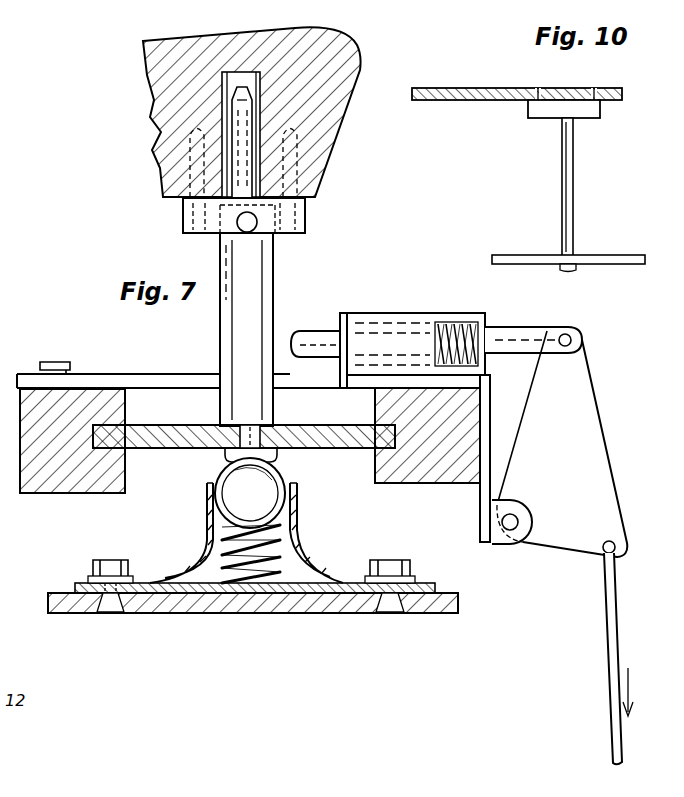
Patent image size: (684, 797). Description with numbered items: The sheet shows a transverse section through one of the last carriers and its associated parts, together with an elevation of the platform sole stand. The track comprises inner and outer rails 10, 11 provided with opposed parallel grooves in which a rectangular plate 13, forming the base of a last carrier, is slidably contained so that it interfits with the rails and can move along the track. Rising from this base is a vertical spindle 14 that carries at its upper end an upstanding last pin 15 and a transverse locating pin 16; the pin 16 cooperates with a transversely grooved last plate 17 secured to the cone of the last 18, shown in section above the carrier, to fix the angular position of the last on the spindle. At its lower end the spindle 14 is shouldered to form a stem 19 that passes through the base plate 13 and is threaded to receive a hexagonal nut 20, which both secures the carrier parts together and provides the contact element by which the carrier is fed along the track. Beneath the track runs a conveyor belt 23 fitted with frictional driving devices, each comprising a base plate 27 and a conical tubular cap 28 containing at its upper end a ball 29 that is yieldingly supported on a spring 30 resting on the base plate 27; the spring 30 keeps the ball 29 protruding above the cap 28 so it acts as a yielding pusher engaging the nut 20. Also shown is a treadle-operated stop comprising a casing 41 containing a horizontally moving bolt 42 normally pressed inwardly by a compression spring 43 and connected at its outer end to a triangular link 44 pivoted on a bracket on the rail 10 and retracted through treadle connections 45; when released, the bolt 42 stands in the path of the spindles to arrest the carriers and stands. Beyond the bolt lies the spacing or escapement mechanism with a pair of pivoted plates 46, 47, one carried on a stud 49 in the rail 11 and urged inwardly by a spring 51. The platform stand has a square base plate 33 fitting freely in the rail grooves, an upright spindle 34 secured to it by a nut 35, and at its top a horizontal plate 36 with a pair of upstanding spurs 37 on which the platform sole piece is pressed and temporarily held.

In FIG. 7, the inner rail 10 is at (442, 487).
In FIG. 7, the outer rail 11 is at (92, 493).
In FIG. 7, the rectangular plate 13 is at (185, 452).
In FIG. 7, the vertical spindle 14 is at (263, 294).
In FIG. 7, the last pin 15 is at (243, 133).
In FIG. 7, the transverse locating pin 16 is at (249, 233).
In FIG. 7, the last plate 17 is at (305, 222).
In FIG. 7, the die block 18 is at (343, 65).
In FIG. 7, the stem 19 is at (258, 428).
In FIG. 7, the hexagonal nut 20 is at (278, 462).
In FIG. 7, the conveyor belt 23 is at (458, 602).
In FIG. 7, the base plate 27 is at (303, 594).
In FIG. 7, the conical tubular cap 28 is at (297, 540).
In FIG. 7, the ball 29 is at (284, 502).
In FIG. 7, the spring 30 is at (283, 557).
In FIG. 10, the base plate 33 is at (600, 255).
In FIG. 10, the upright spindle 34 is at (573, 158).
In FIG. 10, the nut 35 is at (578, 270).
In FIG. 10, the horizontal plate 36 is at (594, 112).
In FIG. 10, the upstanding spurs 37 is at (594, 87).
In FIG. 7, the casing 41 is at (388, 318).
In FIG. 7, the bolt 42 is at (312, 342).
In FIG. 7, the compression spring 43 is at (470, 322).
In FIG. 7, the triangular link 44 is at (590, 426).
In FIG. 7, the treadle connections 45 is at (616, 634).
In FIG. 7, the plate 46 is at (326, 390).
In FIG. 7, the plate 47 is at (176, 377).
In FIG. 7, the stud 49 is at (60, 362).
In FIG. 7, the spring 51 is at (17, 378).